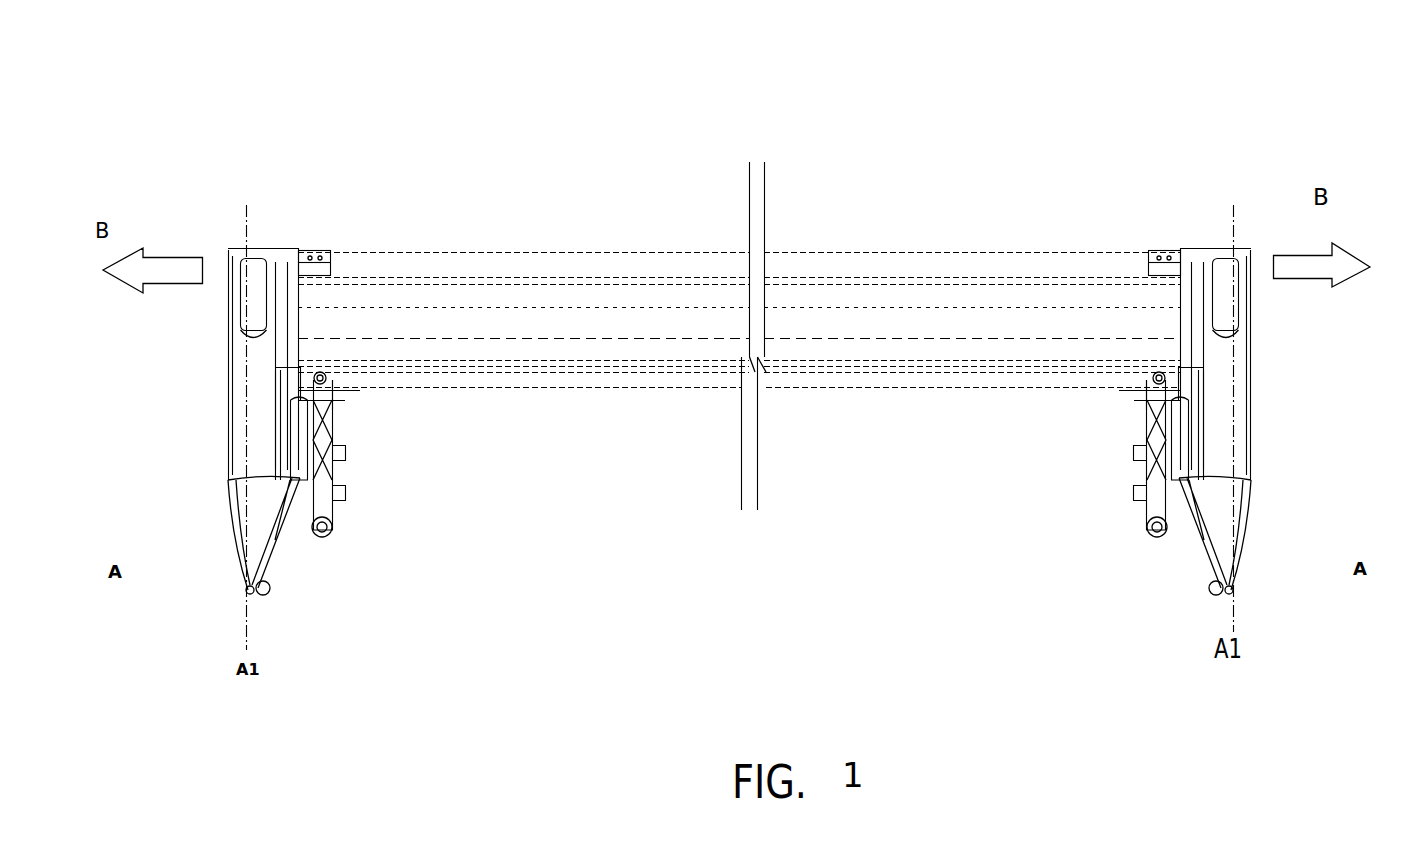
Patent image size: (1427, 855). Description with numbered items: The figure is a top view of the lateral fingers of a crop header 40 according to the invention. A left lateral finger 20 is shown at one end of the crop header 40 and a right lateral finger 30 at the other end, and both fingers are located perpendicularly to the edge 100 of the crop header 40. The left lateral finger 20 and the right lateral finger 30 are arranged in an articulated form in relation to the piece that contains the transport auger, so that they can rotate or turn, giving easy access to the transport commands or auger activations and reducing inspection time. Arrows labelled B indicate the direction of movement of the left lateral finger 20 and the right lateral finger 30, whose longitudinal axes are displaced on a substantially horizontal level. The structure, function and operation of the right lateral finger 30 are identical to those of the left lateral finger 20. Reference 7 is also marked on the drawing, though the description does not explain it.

The frame 7 is at (355, 268).
The left lateral finger 20 is at (228, 528).
The right lateral finger 30 is at (1253, 527).
The crop header 40 is at (612, 220).
The edge of the crop header 100 is at (272, 293).